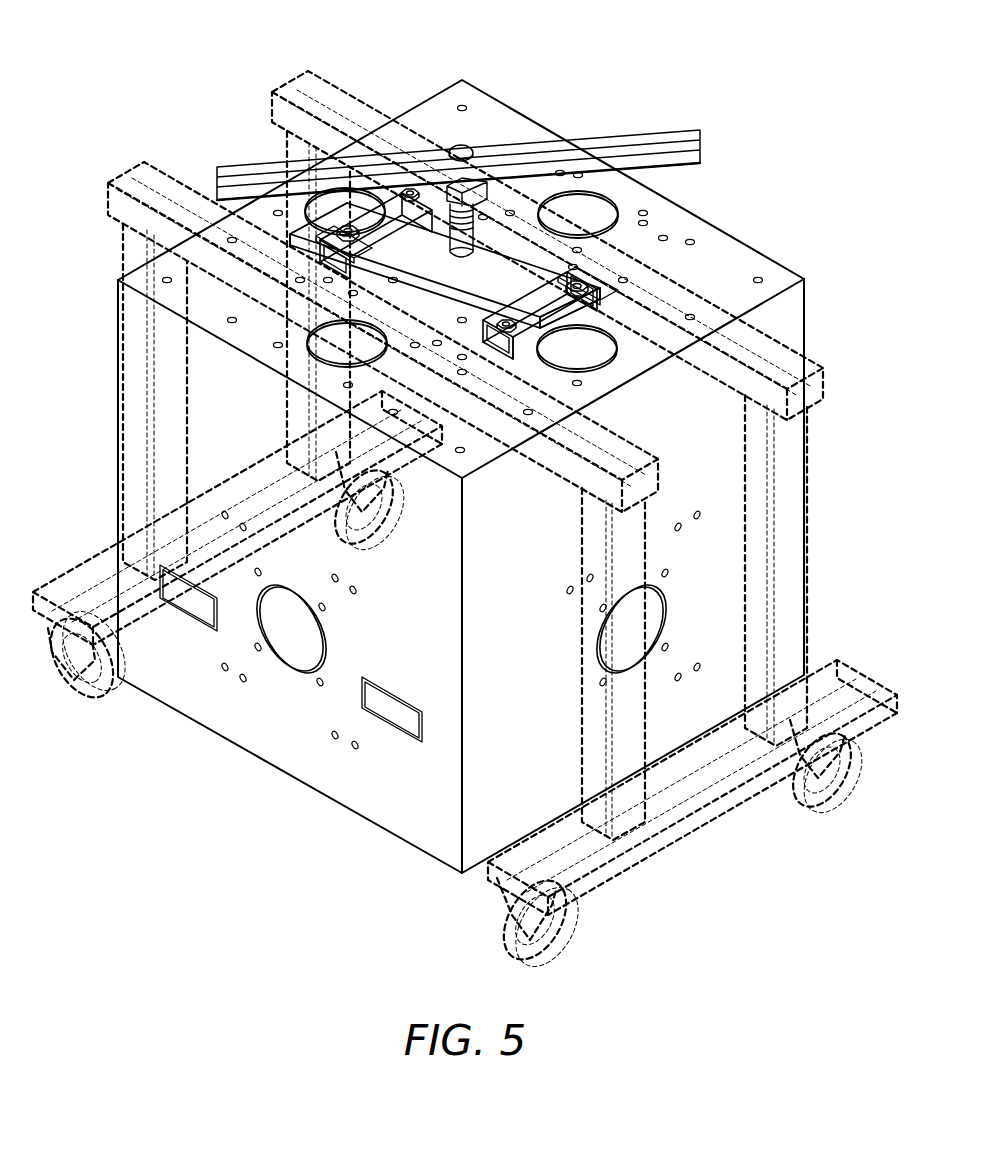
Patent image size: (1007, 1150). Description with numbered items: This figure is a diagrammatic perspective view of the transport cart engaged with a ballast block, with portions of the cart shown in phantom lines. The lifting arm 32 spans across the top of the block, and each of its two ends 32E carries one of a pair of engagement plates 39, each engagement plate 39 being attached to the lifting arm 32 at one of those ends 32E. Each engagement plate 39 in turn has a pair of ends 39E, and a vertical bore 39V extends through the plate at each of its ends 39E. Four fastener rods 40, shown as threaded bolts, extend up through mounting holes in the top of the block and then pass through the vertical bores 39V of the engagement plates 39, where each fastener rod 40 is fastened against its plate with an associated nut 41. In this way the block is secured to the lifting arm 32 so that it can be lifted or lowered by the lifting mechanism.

The lifting arm 32 is at (535, 270).
The ends of the lifting arm 32E is at (366, 236).
The engagement plates 39 is at (371, 246).
The ends of the engagement plates 39E is at (572, 280).
The vertical bore 39V is at (560, 362).
The fastener rods 40 is at (347, 226).
The nut 41 is at (347, 214).